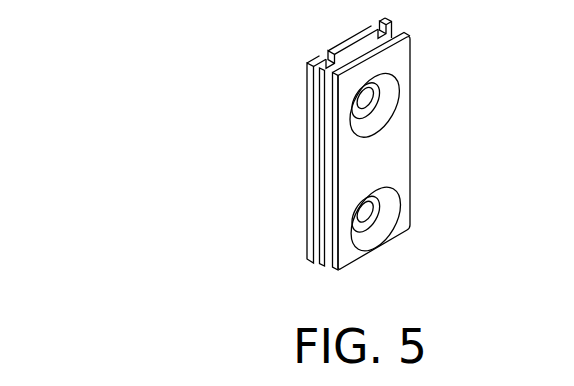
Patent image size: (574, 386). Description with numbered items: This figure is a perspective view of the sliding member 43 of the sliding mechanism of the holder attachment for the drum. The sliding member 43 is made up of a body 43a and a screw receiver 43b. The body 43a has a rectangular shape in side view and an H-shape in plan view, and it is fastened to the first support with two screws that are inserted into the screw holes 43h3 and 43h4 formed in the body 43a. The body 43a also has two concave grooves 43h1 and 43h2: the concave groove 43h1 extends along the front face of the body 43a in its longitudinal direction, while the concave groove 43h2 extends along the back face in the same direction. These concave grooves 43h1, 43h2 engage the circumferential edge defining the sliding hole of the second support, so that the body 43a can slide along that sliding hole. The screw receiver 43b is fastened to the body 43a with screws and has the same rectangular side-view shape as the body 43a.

The sliding member 43 is at (124, 84).
The body 43a is at (398, 151).
The screw receiver 43b is at (337, 46).
The concave groove 43h1 is at (328, 72).
The concave groove 43h2 is at (395, 33).
The screw hole 43h3 is at (370, 121).
The screw hole 43h4 is at (371, 231).